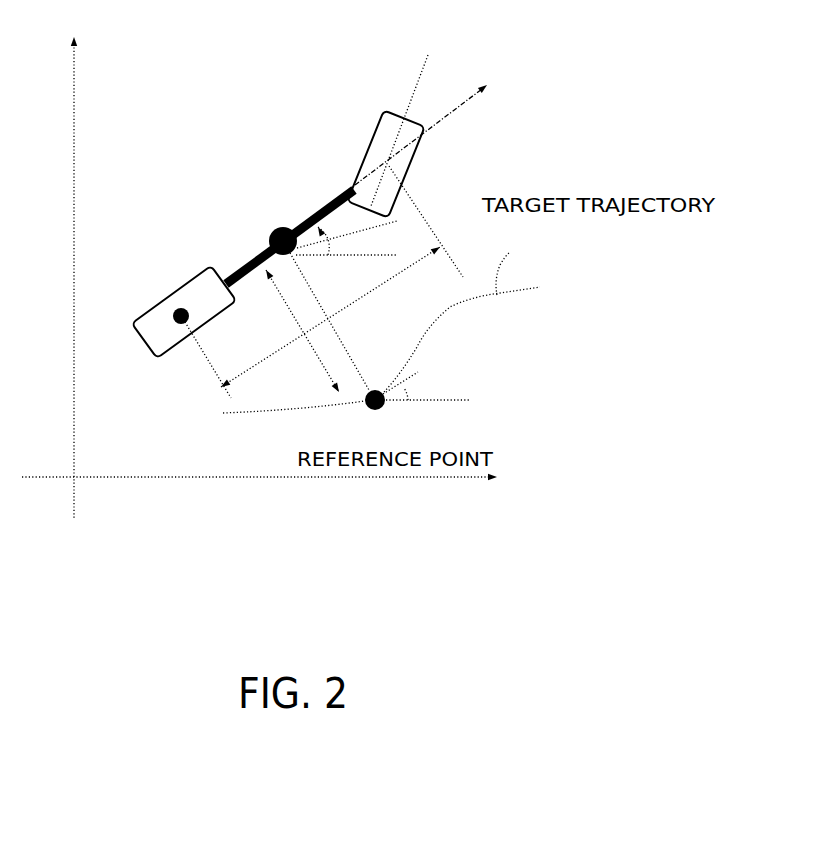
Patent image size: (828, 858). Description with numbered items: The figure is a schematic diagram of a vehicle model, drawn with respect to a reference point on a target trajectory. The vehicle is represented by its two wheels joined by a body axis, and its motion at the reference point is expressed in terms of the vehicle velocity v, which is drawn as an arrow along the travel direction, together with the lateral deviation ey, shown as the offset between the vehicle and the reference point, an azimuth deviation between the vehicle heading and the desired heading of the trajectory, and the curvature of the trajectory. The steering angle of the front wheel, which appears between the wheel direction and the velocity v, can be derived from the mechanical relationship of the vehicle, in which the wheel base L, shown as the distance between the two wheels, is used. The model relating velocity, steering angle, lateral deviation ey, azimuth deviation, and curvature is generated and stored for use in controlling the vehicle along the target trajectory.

The vehicle velocity v is at (427, 135).
The wheel base L is at (330, 317).
The lateral deviation ey is at (317, 322).